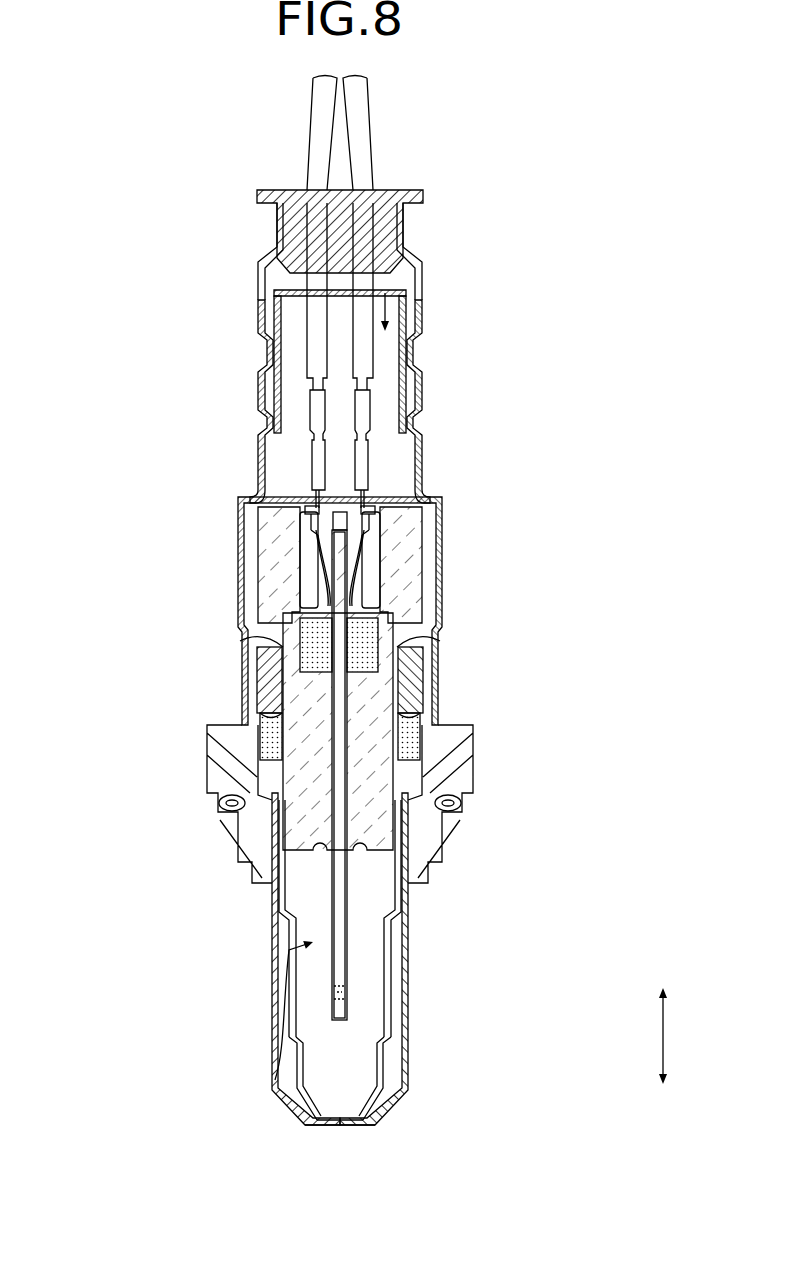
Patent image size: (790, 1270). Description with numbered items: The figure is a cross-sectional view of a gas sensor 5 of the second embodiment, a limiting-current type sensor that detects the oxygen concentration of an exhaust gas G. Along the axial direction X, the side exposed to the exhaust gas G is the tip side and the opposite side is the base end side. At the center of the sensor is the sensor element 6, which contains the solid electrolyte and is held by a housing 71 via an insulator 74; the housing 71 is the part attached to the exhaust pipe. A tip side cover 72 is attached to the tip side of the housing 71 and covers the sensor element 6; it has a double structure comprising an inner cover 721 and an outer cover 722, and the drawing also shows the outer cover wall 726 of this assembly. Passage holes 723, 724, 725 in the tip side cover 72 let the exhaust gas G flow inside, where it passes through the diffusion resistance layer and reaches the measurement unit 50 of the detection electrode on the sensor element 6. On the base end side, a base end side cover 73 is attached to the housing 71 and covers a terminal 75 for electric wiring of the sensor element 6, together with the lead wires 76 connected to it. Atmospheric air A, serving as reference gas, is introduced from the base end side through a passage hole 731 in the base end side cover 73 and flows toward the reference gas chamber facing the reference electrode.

The gas sensor 5 is at (462, 212).
The sensor element 6 is at (433, 795).
The measurement unit 50 is at (351, 997).
The housing 71 is at (227, 760).
The tip side cover 72 is at (284, 1001).
The inner cover 721 is at (273, 922).
The outer cover 722 is at (273, 985).
The passage hole 723 is at (340, 1126).
The passage hole 724 is at (358, 1126).
The passage hole 725 is at (275, 1080).
The outer cover 726 is at (402, 947).
The base end side cover 73 is at (425, 452).
The passage hole 731 is at (415, 287).
The insulator 74 is at (380, 777).
The terminal 75 is at (378, 550).
The lead wire 76 is at (317, 340).
The atmospheric air A is at (387, 282).
The exhaust gas G is at (273, 1073).
The axial direction X is at (668, 1037).